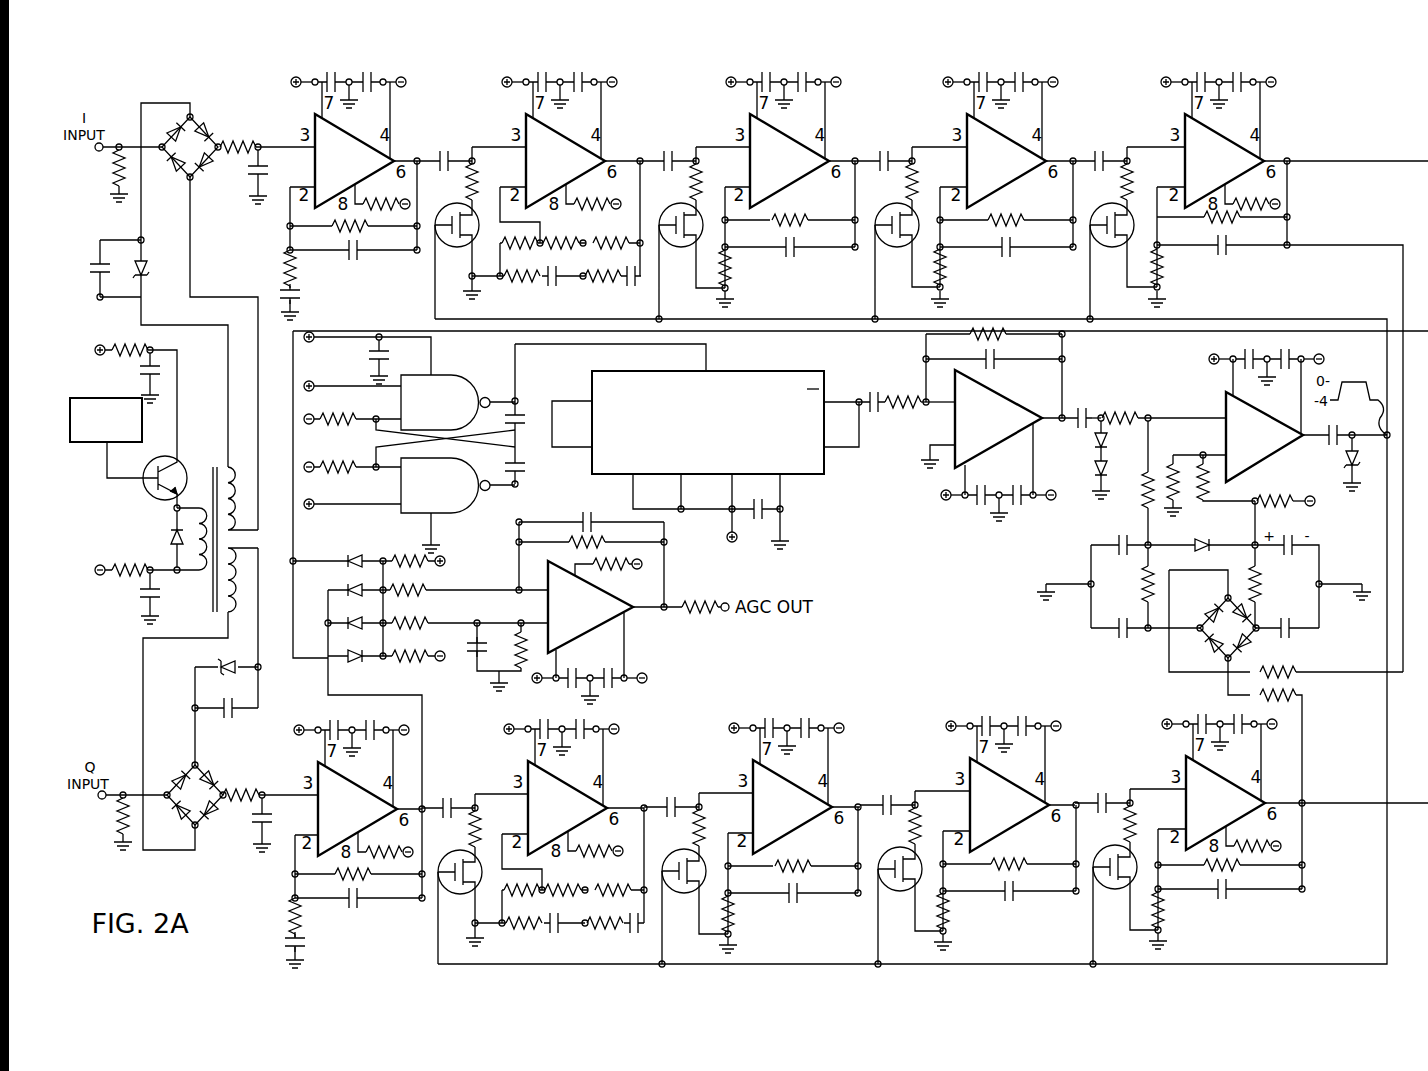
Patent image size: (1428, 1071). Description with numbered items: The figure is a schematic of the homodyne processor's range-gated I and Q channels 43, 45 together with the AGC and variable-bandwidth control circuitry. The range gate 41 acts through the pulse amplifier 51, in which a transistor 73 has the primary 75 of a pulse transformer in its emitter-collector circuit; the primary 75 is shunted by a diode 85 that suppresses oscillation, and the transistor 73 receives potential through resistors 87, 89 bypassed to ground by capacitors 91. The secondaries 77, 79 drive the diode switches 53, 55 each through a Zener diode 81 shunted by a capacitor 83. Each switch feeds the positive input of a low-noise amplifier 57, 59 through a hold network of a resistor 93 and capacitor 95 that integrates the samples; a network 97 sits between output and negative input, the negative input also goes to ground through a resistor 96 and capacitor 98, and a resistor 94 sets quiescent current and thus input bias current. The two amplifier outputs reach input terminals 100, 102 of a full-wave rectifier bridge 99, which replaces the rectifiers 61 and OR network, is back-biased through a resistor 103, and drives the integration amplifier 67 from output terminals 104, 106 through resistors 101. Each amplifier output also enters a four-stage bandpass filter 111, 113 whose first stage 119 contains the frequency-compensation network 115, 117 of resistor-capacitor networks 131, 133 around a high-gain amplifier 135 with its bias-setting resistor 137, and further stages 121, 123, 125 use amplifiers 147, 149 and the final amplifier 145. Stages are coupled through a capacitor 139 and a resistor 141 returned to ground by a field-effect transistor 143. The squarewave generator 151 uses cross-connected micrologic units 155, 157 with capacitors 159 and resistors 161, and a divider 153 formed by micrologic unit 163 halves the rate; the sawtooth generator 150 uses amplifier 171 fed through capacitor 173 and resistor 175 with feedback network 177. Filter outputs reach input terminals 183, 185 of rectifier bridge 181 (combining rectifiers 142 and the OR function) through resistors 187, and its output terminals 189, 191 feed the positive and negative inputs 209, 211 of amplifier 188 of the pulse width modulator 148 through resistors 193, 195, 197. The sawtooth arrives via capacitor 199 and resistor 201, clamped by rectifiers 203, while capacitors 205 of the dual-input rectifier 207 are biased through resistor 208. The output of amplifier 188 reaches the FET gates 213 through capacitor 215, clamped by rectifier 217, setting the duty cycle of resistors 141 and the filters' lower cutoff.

The range gate 41 is at (98, 396).
The I channel 43 is at (246, 177).
The Q channel 45 is at (274, 839).
The pulse amplifier 51 is at (193, 543).
The switch 53 is at (181, 171).
The switch 55 is at (241, 789).
The low-noise amplifier 57 is at (348, 140).
The low-noise amplifier 59 is at (351, 788).
The full-wave rectifier 61 is at (375, 679).
The integration amplifier 67 is at (589, 629).
The transistor 73 is at (148, 474).
The primary 75 is at (177, 532).
The secondary 77 is at (232, 502).
The secondary 79 is at (232, 592).
The Zener diode 81 is at (152, 255).
The capacitor 83 is at (115, 268).
The diode 85 is at (162, 544).
The resistor 87 is at (126, 346).
The resistor 89 is at (116, 561).
The capacitor 91 is at (140, 366).
The resistor 93 is at (238, 140).
The resistor 94 is at (374, 197).
The capacitor 95 is at (270, 175).
The resistor 96 is at (284, 268).
The network 97 is at (361, 240).
The capacitor 98 is at (300, 297).
The full-wave rectifier bridge 99 is at (362, 696).
The input terminal 100 is at (298, 558).
The resistor 101 is at (420, 620).
The input terminal 102 is at (328, 620).
The resistor 103 is at (414, 556).
The output terminal 104 is at (398, 582).
The output terminal 106 is at (360, 612).
The multistage bandpass filter 111 is at (650, 106).
The multistage bandpass filter 113 is at (648, 764).
The sensitivity or frequency-compensation network 115 is at (565, 269).
The sensitivity or frequency-compensation network 117 is at (567, 916).
The first stage 119 is at (497, 112).
The stage 121 is at (727, 112).
The stage 123 is at (942, 110).
The stage 125 is at (1160, 110).
The resistor capacitor network 131 is at (612, 267).
The resistor capacitor network 133 is at (533, 267).
The high-gain amplifier 135 is at (559, 140).
The resistor 137 is at (588, 210).
The capacitor 139 is at (446, 150).
The resistor 141 is at (468, 186).
The full-wave rectifier 142 is at (1099, 652).
The field-effect transistor 143 is at (457, 287).
The final amplifier 145 is at (1220, 143).
The high-gain operational amplifier 147 is at (783, 140).
The pulse width modulator 148 is at (1183, 370).
The high-gain operational amplifier 149 is at (1000, 140).
The sawtooth generator 150 is at (897, 378).
The squarewave generator 151 is at (476, 358).
The divider 153 is at (690, 446).
The low-power diode-transistor micrologic unit 155 is at (409, 381).
The low-power diode-transistor micrologic unit 157 is at (409, 499).
The capacitor 159 is at (532, 446).
The resistor 161 is at (352, 450).
The low-power diode-transistor micrologic unit 163 is at (592, 382).
The high gain operational amplifier 171 is at (989, 445).
The capacitor 173 is at (880, 412).
The resistor 175 is at (907, 409).
The feedback network 177 is at (997, 374).
The rectifier bridge network 181 is at (1220, 622).
The input terminal 183 is at (1226, 600).
The input terminal 185 is at (1239, 646).
The resistor 187 is at (1290, 684).
The high-gain operational amplifier 188 is at (1266, 415).
The output terminal 189 is at (1210, 638).
The output terminal 191 is at (1278, 642).
The resistor 193 is at (1158, 582).
The resistor 195 is at (1140, 505).
The resistor 197 is at (1198, 492).
The capacitor 199 is at (1082, 404).
The resistor 201 is at (1124, 414).
The rectifier 203 is at (1088, 445).
The capacitor 205 is at (1124, 618).
The dual input rectifier 207 is at (1118, 609).
The resistor 208 is at (1282, 491).
The positive input 209 is at (1202, 452).
The negative input 211 is at (1218, 414).
The base 213 is at (456, 261).
The capacitor 215 is at (1328, 452).
The rectifier 217 is at (1342, 476).